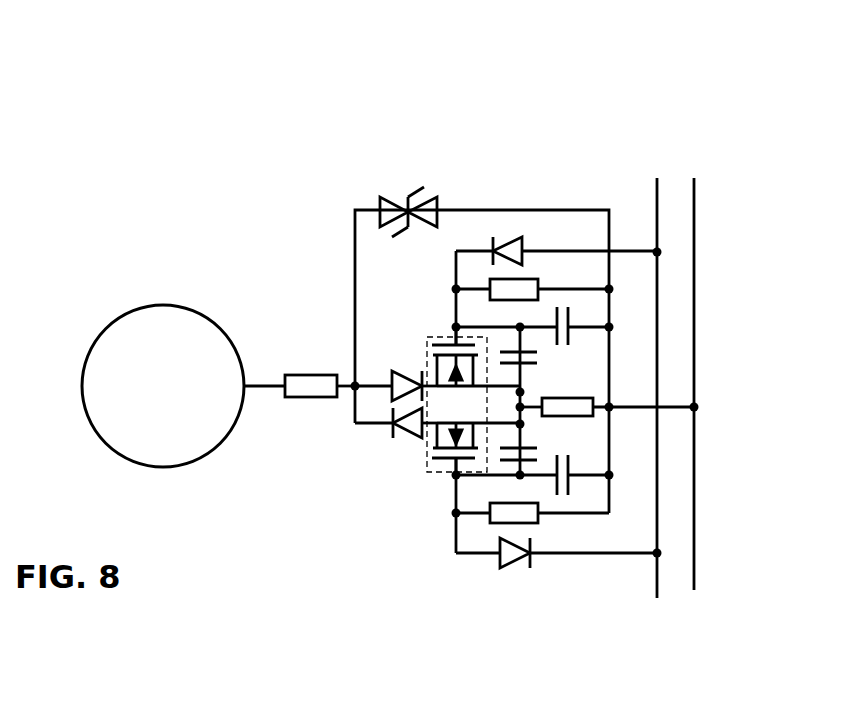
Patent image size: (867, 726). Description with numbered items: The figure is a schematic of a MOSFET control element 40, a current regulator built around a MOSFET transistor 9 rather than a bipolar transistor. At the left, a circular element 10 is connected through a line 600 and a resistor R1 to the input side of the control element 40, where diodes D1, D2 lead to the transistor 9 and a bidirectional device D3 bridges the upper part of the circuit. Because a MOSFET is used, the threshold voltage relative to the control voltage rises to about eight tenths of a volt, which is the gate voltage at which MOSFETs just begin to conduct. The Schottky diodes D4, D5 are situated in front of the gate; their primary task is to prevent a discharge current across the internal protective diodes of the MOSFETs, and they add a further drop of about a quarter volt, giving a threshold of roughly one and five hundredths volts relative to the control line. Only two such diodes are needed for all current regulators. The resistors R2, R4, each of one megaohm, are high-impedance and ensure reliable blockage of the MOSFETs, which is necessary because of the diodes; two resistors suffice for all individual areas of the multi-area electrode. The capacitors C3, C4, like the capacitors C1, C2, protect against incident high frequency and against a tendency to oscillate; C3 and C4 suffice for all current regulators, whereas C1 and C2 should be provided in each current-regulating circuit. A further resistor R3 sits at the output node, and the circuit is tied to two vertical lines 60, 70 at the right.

The sensor element 10 is at (132, 332).
The signal line 600 is at (260, 386).
The MOSFET control element 40 is at (766, 159).
The MOSFET transistor 9 is at (427, 474).
The supply rail 60 is at (657, 598).
The ground rail 70 is at (694, 590).
The resistor R1 is at (300, 397).
The resistor R2 is at (536, 513).
The resistor R3 is at (577, 399).
The resistor R4 is at (527, 287).
The capacitor C1 is at (537, 443).
The capacitor C2 is at (537, 362).
The capacitor C3 is at (570, 494).
The capacitor C4 is at (570, 307).
The diode D1 is at (405, 440).
The diode D2 is at (393, 370).
The bidirectional suppressor diode D3 is at (381, 198).
The Schottky diode D4 is at (500, 567).
The Schottky diode D5 is at (510, 242).